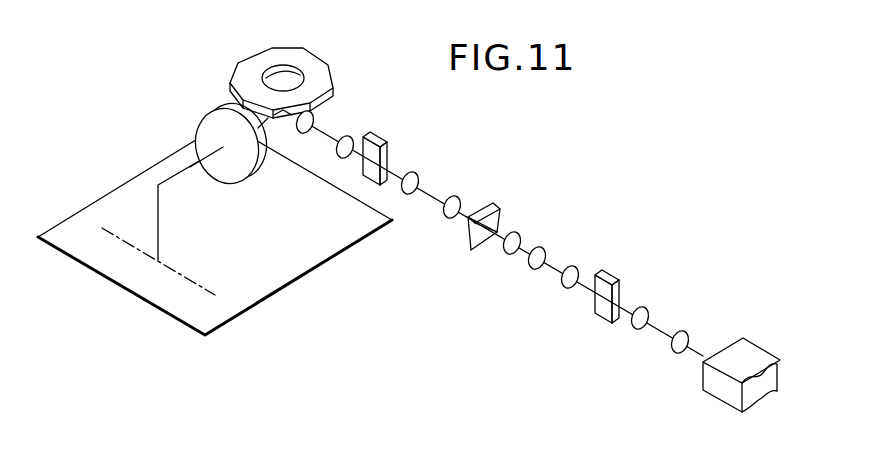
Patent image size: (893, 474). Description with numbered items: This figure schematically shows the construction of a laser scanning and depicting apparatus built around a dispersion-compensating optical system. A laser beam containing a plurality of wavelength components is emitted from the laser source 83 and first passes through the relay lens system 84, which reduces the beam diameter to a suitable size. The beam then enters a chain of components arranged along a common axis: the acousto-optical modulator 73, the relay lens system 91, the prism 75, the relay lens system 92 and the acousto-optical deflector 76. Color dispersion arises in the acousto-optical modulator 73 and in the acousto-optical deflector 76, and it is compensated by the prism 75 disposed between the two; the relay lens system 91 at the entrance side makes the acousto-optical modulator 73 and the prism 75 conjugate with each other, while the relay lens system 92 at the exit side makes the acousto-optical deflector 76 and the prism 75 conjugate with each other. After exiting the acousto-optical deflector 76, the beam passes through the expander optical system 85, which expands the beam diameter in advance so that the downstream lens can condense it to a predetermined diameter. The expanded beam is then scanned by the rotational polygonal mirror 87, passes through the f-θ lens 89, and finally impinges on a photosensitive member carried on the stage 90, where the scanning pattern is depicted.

The acousto-optical modulator 73 is at (611, 277).
The prism 75 is at (495, 205).
The acousto-optical deflector 76 is at (383, 143).
The laser source 83 is at (720, 393).
The relay lens system 84 is at (680, 370).
The expander optical system 85 is at (362, 133).
The rotational polygonal mirror 87 is at (327, 67).
The f-θ lens 89 is at (205, 122).
The stage 90 is at (123, 192).
The relay lens system 91 is at (563, 303).
The relay lens system 92 is at (448, 237).